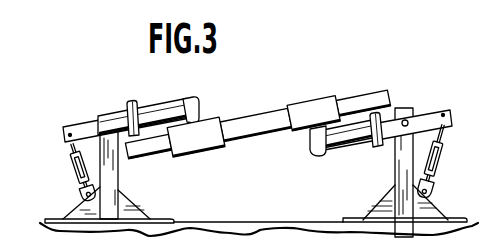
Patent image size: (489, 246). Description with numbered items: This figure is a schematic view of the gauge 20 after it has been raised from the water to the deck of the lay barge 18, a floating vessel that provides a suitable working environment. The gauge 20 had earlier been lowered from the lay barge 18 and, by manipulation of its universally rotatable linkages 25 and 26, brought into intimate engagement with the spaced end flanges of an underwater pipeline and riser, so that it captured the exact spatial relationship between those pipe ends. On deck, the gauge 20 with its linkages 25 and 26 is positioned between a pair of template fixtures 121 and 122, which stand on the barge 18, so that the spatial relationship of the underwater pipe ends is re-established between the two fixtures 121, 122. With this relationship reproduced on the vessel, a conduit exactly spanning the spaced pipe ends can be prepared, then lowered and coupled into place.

The lay barge 18 is at (259, 174).
The gauge 20 is at (247, 96).
The universally rotatable linkage 25 is at (197, 98).
The universally rotatable linkage 26 is at (362, 151).
The template fixture 121 is at (74, 185).
The template fixture 122 is at (437, 182).